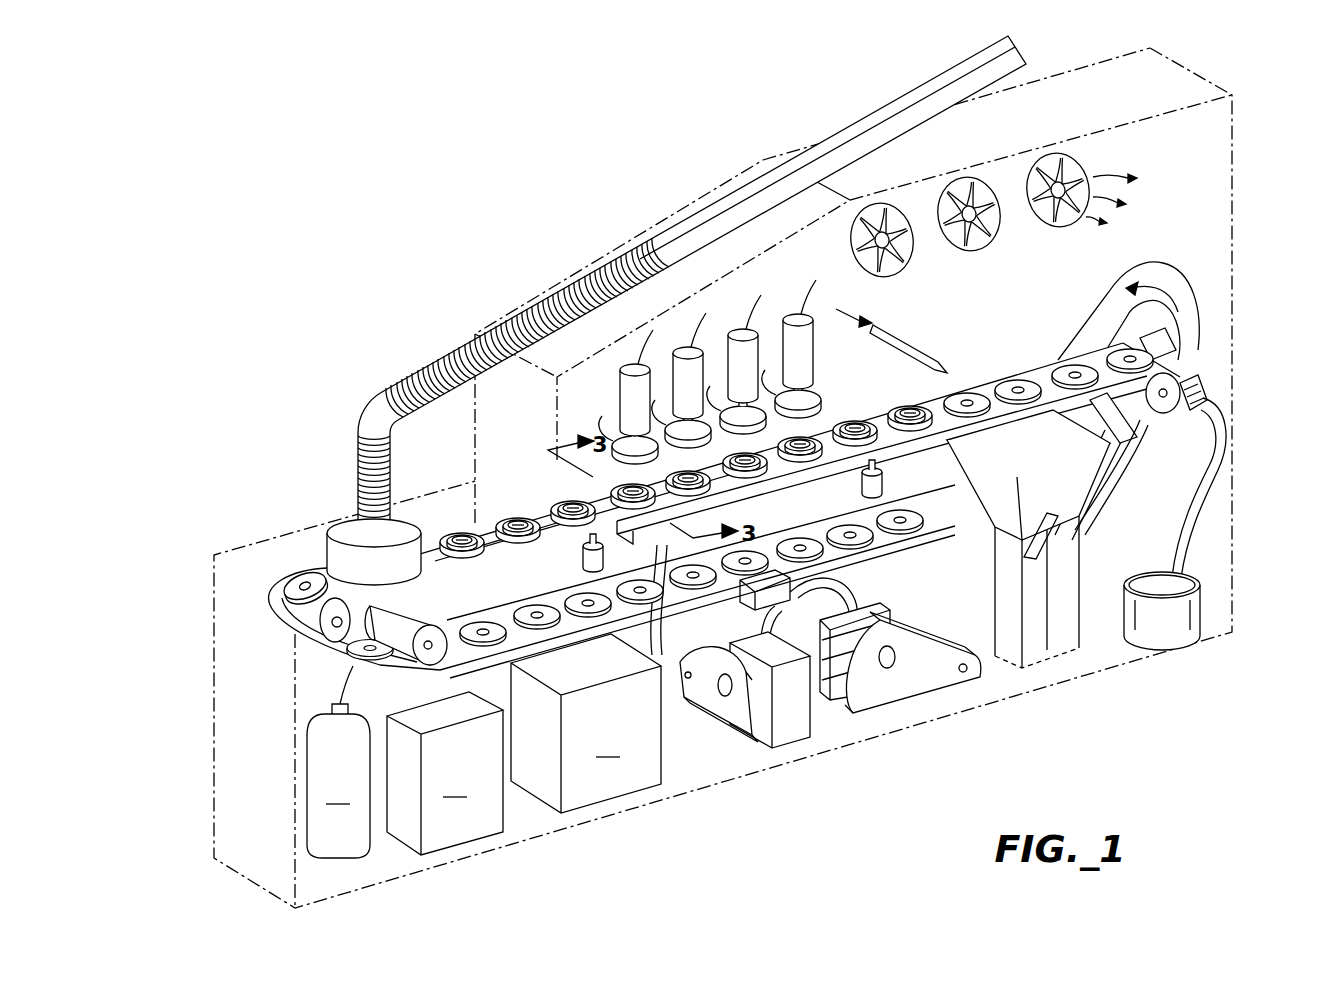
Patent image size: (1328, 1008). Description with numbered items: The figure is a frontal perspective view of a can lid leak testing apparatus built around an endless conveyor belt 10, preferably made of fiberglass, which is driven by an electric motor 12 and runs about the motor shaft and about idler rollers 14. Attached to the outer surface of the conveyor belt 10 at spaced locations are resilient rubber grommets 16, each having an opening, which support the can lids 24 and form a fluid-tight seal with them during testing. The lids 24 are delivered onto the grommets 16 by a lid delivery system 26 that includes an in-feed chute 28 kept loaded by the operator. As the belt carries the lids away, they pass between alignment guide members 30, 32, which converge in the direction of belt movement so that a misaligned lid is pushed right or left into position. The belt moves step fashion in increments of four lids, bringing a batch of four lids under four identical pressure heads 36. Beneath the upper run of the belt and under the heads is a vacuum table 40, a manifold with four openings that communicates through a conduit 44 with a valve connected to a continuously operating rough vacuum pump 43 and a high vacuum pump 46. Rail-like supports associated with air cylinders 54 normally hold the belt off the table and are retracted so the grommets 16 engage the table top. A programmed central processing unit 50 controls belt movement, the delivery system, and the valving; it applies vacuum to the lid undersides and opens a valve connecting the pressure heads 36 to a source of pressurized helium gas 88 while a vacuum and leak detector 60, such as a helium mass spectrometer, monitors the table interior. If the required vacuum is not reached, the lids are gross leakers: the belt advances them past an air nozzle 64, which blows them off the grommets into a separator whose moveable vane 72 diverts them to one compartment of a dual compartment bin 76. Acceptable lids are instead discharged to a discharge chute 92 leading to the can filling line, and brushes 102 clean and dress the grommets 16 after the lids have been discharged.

The conveyor belt 10 is at (1016, 366).
The electric motor 12 is at (327, 633).
The idler rollers 14 is at (412, 620).
The grommets 16 is at (957, 388).
The can lids 24 is at (600, 278).
The lid delivery system 26 is at (353, 525).
The in-feed chute 28 is at (445, 365).
The alignment guide member 30 is at (533, 510).
The alignment guide member 32 is at (490, 548).
The pressure heads 36 is at (838, 405).
The vacuum table 40 is at (880, 538).
The rough vacuum pump 43 is at (913, 673).
The conduit 44 is at (838, 556).
The high vacuum pump 46 is at (787, 720).
The central processing unit 50 is at (445, 773).
The air cylinders 54 is at (583, 566).
The vacuum and leak detector 60 is at (586, 723).
The air nozzle 64 is at (898, 334).
The vane 72 is at (1030, 525).
The dual compartment bin 76 is at (1087, 642).
The source of pressurized helium gas 88 is at (338, 762).
The discharge chute 92 is at (1135, 272).
The brushes 102 is at (1168, 420).